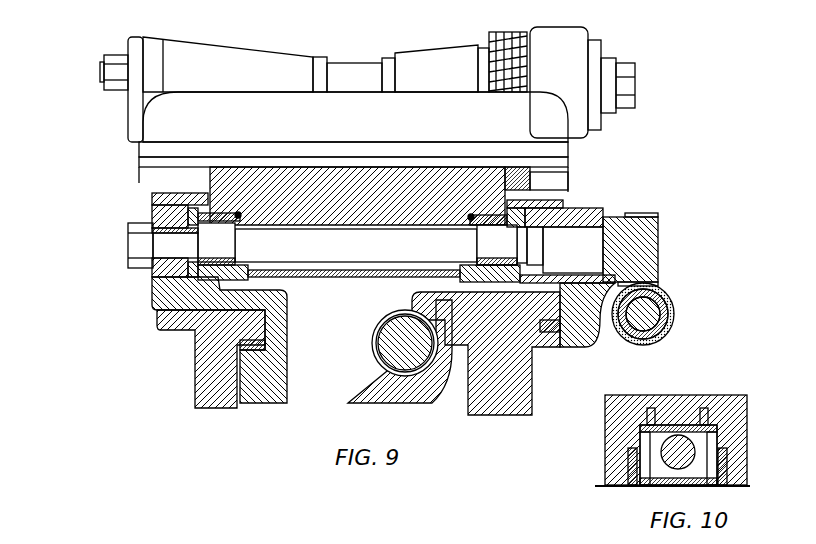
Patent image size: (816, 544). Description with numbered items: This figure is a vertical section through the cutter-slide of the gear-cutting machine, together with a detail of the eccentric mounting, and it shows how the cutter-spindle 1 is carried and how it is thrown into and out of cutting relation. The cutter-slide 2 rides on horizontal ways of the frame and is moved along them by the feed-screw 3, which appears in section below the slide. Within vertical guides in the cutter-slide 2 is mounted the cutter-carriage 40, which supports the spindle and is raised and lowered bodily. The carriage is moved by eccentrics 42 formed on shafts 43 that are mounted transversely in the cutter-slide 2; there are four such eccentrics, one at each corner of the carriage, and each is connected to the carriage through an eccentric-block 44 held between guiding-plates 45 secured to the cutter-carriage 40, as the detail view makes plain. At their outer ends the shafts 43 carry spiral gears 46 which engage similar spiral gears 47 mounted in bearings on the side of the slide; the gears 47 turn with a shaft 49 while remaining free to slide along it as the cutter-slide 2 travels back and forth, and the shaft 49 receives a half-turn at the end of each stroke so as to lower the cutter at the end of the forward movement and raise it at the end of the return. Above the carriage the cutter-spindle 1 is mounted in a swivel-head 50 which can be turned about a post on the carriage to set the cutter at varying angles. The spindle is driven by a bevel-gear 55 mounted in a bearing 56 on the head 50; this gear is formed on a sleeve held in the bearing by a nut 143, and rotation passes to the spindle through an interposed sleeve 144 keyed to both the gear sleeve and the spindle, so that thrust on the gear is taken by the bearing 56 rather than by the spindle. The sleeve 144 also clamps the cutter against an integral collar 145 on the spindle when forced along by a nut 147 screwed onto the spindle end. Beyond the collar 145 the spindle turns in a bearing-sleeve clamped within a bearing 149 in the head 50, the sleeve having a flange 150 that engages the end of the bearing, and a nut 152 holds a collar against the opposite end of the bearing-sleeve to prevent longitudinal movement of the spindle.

In FIG. 9, the cutter-spindle 1 is at (354, 77).
In FIG. 9, the cutter-slide 2 is at (152, 291).
In FIG. 9, the feed-screw 3 is at (376, 345).
In FIG. 9, the cutter-carriage 40 is at (530, 182).
In FIG. 9, the eccentrics 42 is at (357, 244).
In FIG. 10, the eccentrics 42 is at (718, 432).
In FIG. 9, the shafts 43 is at (389, 246).
In FIG. 10, the shafts 43 is at (640, 443).
In FIG. 9, the eccentric-blocks 44 is at (236, 262).
In FIG. 10, the eccentric-blocks 44 is at (704, 408).
In FIG. 9, the guiding-plates 45 is at (470, 282).
In FIG. 10, the guiding-plates 45 is at (672, 425).
In FIG. 9, the spiral gears 46 is at (658, 239).
In FIG. 9, the spiral gears 47 is at (675, 318).
In FIG. 9, the shaft 49 is at (655, 300).
In FIG. 9, the swivel-head 50 is at (353, 142).
In FIG. 9, the bevel-gear 55 is at (508, 37).
In FIG. 9, the bearing 56 is at (559, 82).
In FIG. 9, the nut 143 is at (596, 45).
In FIG. 9, the sleeve 144 is at (608, 64).
In FIG. 9, the collar 145 is at (322, 57).
In FIG. 9, the nut 147 is at (635, 85).
In FIG. 9, the bearing 149 is at (228, 64).
In FIG. 9, the flange 150 is at (130, 111).
In FIG. 9, the nut 152 is at (112, 59).